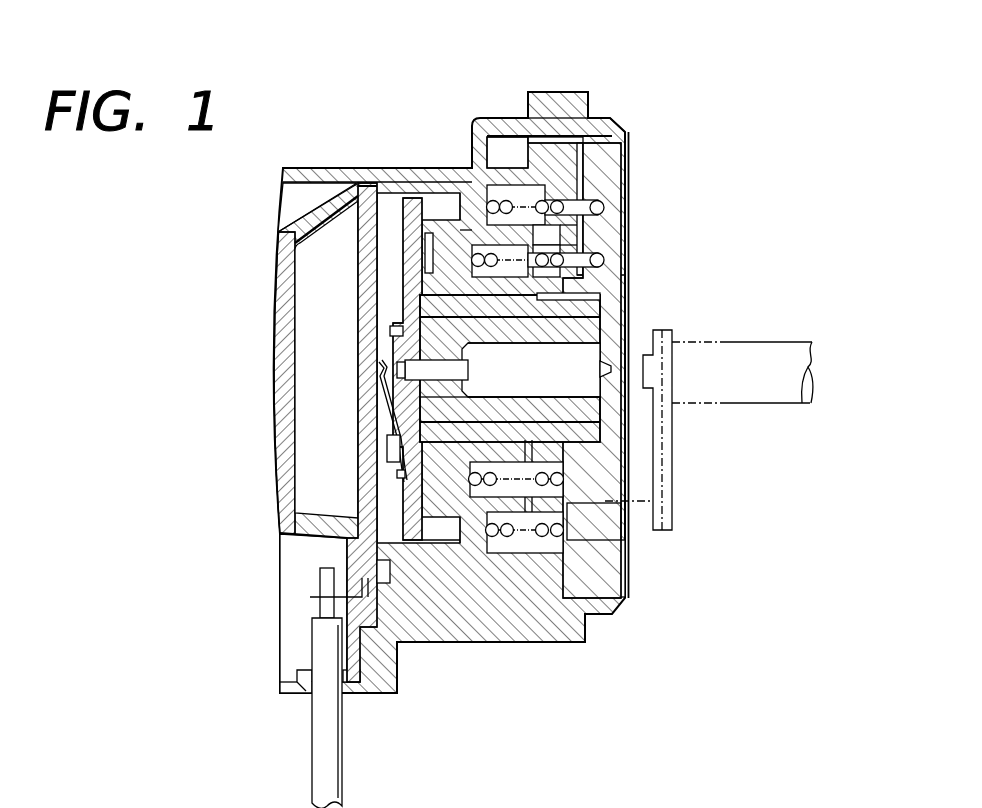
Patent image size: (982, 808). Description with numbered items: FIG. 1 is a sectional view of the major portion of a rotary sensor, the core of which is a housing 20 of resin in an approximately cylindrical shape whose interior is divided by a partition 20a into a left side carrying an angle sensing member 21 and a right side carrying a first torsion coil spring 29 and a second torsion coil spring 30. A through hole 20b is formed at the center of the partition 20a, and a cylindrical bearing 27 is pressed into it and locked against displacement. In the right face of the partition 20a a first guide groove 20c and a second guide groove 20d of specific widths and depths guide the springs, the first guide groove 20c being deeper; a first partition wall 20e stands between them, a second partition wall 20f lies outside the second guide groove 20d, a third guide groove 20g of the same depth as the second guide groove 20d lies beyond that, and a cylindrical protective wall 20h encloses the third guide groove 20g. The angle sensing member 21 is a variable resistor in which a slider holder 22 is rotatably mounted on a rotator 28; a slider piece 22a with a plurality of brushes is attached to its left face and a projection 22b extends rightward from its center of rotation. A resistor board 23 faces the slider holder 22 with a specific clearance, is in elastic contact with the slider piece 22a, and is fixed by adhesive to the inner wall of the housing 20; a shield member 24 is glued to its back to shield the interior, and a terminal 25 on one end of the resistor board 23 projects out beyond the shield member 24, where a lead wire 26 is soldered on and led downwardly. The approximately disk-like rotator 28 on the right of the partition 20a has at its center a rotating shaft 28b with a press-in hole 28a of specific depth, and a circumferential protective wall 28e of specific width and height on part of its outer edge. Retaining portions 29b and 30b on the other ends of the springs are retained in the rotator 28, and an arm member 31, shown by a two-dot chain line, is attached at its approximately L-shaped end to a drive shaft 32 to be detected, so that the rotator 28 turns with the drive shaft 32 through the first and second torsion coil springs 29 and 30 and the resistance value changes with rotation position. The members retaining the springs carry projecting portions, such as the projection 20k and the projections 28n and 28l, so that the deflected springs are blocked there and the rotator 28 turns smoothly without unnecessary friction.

The housing 20 is at (549, 650).
The partition 20a is at (442, 488).
The through hole 20b is at (461, 498).
The first guide groove 20c is at (476, 247).
The second guide groove 20d is at (458, 192).
The first partition wall 20e is at (606, 133).
The second partition wall 20f is at (545, 148).
The third guide groove 20g is at (497, 142).
The cylindrical protective wall 20h is at (600, 118).
The projection 20k is at (582, 296).
The angle sensing member 21 is at (391, 216).
The slider holder 22 is at (400, 261).
The slider piece 22a is at (380, 372).
The projection 22b is at (392, 332).
The resistor board 23 is at (350, 302).
The shield member 24 is at (277, 292).
The terminal 25 is at (310, 597).
The lead wire 26 is at (317, 728).
The cylindrical bearing 27 is at (590, 310).
The rotator 28 is at (633, 460).
The press-in hole 28a is at (575, 360).
The rotating shaft 28b is at (545, 402).
The protective wall 28e is at (552, 126).
The projection 28l is at (596, 241).
The projection 28n is at (624, 522).
The first torsion coil spring 29 is at (604, 262).
The retaining portion 29b is at (565, 282).
The second torsion coil spring 30 is at (596, 190).
The retaining portion 30b is at (604, 207).
The arm member 31 is at (666, 499).
The drive shaft 32 is at (800, 352).